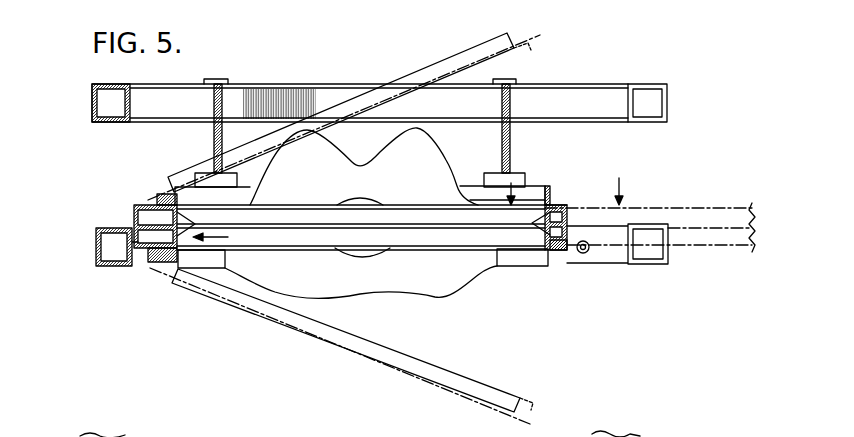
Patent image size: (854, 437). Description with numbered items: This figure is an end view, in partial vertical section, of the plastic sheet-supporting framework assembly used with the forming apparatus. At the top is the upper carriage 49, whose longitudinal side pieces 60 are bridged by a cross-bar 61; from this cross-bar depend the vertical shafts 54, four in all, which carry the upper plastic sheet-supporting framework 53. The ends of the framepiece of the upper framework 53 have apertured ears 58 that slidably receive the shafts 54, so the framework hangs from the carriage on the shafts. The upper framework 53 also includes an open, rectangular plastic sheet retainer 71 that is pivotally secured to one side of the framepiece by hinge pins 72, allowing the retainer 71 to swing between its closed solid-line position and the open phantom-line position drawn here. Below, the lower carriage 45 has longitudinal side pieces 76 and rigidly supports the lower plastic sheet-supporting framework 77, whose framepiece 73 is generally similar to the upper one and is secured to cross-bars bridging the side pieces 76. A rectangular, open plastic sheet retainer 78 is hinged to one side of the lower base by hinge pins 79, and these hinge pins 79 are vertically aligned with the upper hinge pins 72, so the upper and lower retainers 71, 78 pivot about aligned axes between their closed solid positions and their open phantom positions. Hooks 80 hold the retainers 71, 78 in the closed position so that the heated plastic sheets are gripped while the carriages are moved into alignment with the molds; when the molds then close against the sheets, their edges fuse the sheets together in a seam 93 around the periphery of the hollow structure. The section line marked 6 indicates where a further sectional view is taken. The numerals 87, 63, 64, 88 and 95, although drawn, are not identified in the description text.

The upper carriage 49 is at (85, 88).
The longitudinal side pieces 60 is at (92, 103).
The cross-bar 61 is at (285, 88).
The vertical shafts 54 is at (214, 140).
The upper pivot arm 87 is at (467, 49).
The plastic sheet retainer 71 is at (497, 42).
The hinge pins 72 is at (157, 199).
The seam 93 is at (382, 226).
The left clamp body 63 is at (134, 220).
The upper plastic sheet-supporting framework 53 is at (135, 209).
The lower plastic sheet-supporting framework 77 is at (223, 237).
The longitudinal side pieces 76 is at (96, 250).
The framepiece 73 is at (132, 242).
The lower carriage 45 is at (113, 268).
The hinge pins 79 is at (153, 256).
The right clamp body 64 is at (532, 223).
The hooks 80 is at (588, 250).
The plastic sheet retainer 78 is at (565, 258).
The lower pivot arm 88 is at (445, 370).
The flexible sheet 95 is at (428, 278).
The section line 6- 6 is at (563, 193).
The ears 58 is at (75, 429).